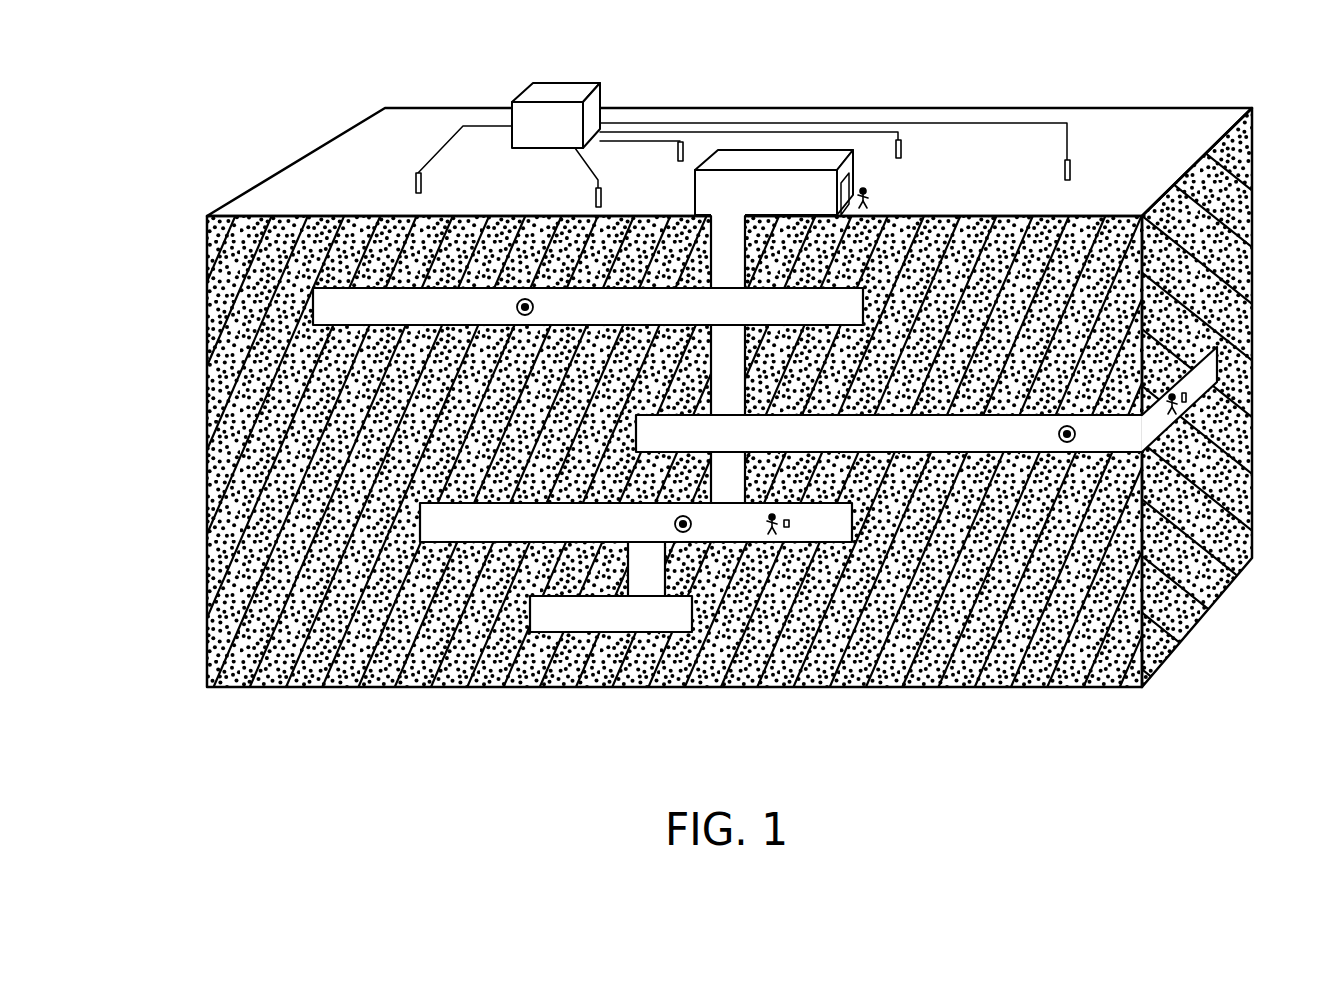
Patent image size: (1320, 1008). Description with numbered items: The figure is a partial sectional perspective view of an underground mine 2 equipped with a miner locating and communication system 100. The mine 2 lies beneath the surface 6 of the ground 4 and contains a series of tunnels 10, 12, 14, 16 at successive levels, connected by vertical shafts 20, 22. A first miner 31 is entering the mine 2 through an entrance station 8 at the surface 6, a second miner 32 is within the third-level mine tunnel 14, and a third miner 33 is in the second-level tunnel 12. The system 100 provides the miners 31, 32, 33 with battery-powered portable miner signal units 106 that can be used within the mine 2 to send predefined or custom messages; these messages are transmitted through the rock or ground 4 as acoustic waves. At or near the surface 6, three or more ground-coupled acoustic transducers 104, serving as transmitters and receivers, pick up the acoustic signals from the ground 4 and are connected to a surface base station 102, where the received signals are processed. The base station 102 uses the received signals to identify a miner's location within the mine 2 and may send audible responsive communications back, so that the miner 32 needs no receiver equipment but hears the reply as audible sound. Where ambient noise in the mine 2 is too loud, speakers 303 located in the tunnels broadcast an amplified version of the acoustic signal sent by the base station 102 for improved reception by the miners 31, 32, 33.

The underground mine 2 is at (185, 152).
The ground 4 is at (207, 407).
The surface 6 is at (313, 163).
The entrance station 8 is at (695, 196).
The tunnel 10 is at (601, 321).
The second-level tunnel 12 is at (901, 448).
The third-level mine tunnel 14 is at (561, 538).
The tunnel 16 is at (621, 628).
The vertical shaft 20 is at (740, 374).
The vertical shaft 22 is at (660, 581).
The first miner 31 is at (873, 196).
The second miner 32 is at (763, 526).
The third miner 33 is at (1160, 416).
The miner locating and communication system 100 is at (486, 46).
The surface base station 102 is at (603, 87).
The acoustic transducers 104 is at (416, 184).
The miner signal unit 106 is at (1187, 397).
The speaker 303 is at (512, 307).